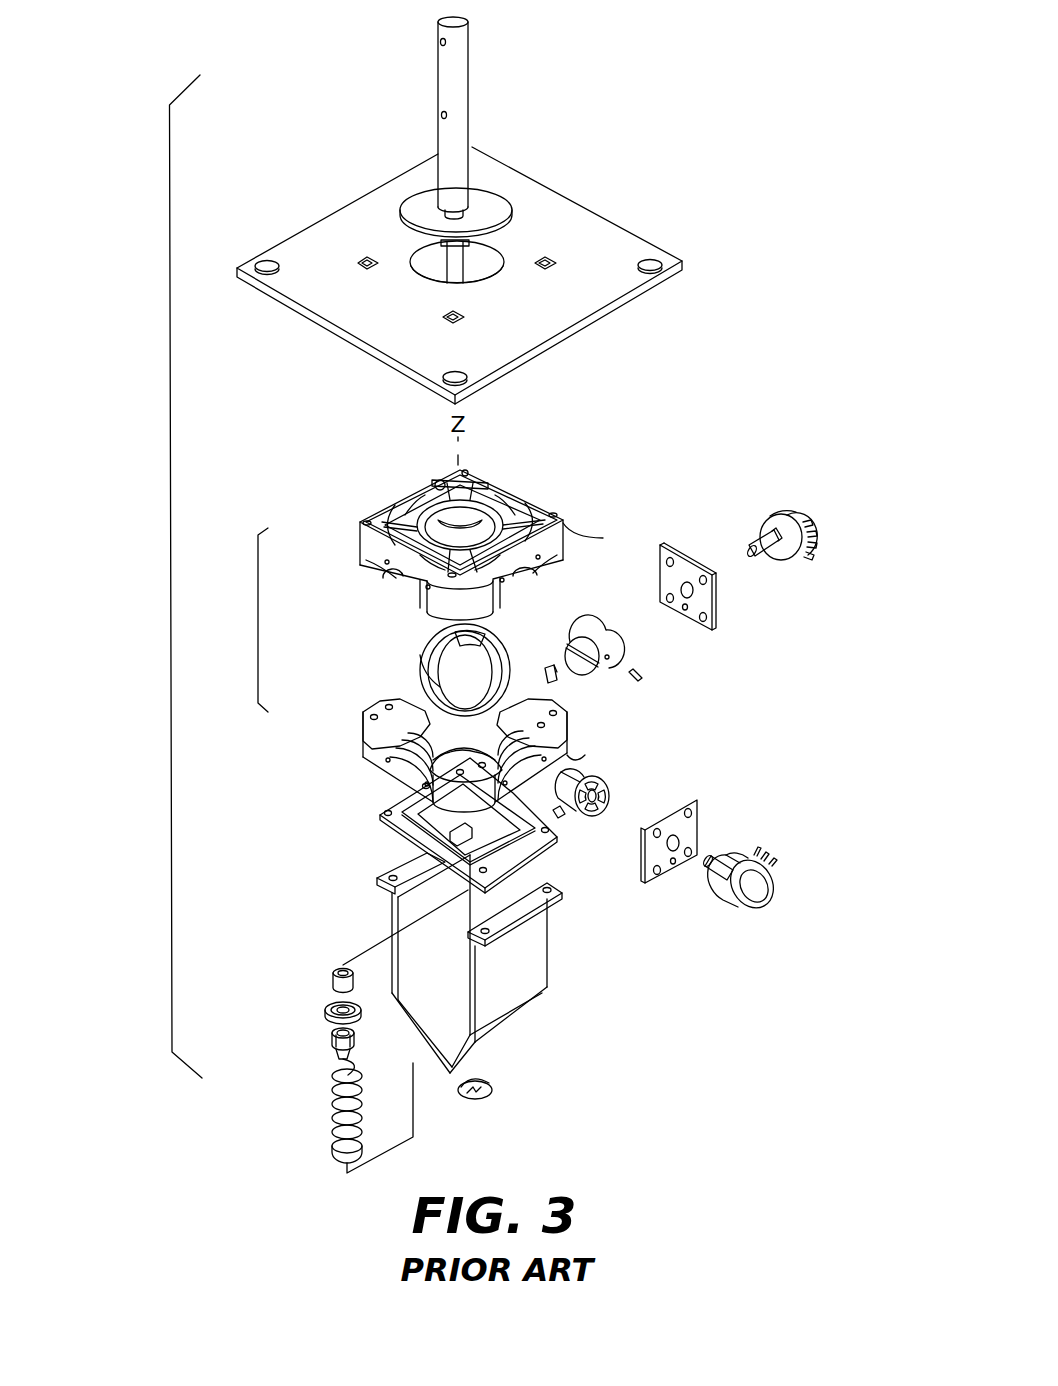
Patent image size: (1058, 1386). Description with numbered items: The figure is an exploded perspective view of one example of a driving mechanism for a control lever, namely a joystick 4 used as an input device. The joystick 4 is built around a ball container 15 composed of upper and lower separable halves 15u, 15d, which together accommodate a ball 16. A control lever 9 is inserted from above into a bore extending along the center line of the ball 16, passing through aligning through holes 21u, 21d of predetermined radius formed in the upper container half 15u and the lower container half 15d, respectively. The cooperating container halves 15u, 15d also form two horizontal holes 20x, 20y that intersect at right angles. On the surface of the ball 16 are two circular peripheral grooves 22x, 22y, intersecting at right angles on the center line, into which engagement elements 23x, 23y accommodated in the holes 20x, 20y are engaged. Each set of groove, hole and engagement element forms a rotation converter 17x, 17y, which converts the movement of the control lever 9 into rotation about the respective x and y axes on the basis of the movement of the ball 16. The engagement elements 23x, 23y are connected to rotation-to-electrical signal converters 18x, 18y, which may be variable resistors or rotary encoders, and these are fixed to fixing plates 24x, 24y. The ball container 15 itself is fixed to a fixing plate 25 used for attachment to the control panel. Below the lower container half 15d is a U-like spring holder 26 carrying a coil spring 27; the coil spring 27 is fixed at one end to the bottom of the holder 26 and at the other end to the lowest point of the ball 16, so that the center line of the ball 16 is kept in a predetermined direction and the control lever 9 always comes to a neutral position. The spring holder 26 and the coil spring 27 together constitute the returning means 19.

The joystick 4 is at (645, 93).
The control lever 9 is at (469, 118).
The fixing plate 25 is at (628, 248).
The ball container 15 is at (243, 620).
The upper container half 15u is at (347, 540).
The lower container half 15d is at (395, 680).
The through hole 21u is at (478, 510).
The through hole 21d is at (380, 822).
The ball 16 is at (413, 673).
The rotation converter 17x is at (603, 538).
The rotation converter 17y is at (585, 755).
The rotation-to-electrical signal converter 18x is at (803, 512).
The rotation-to-electrical signal converter 18y is at (728, 907).
The returning means 19 is at (312, 1014).
The horizontal hole 20x is at (521, 678).
The horizontal hole 20y is at (502, 752).
The circular peripheral groove 22x is at (417, 648).
The circular peripheral groove 22y is at (487, 647).
The engagement element 23x is at (603, 668).
The engagement element 23y is at (612, 788).
The fixing plate 24x is at (717, 608).
The fixing plate 24y is at (663, 883).
The spring holder 26 is at (517, 1033).
The coil spring 27 is at (330, 1090).